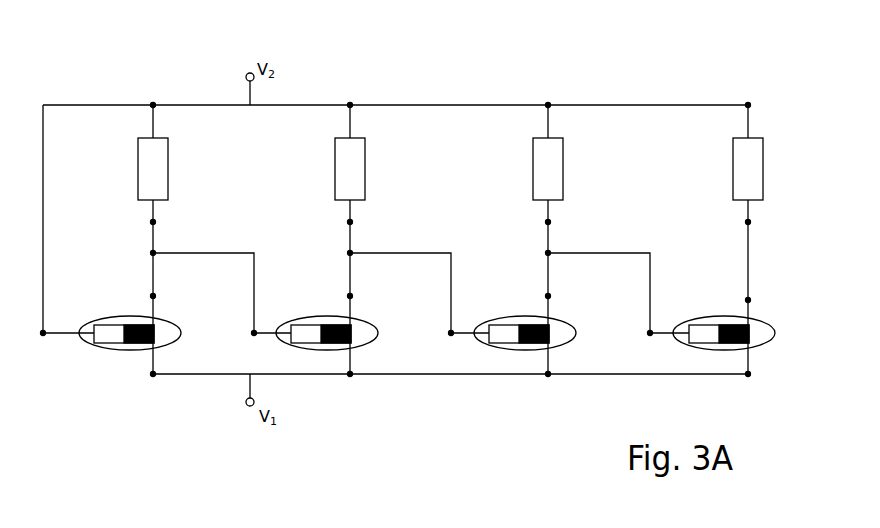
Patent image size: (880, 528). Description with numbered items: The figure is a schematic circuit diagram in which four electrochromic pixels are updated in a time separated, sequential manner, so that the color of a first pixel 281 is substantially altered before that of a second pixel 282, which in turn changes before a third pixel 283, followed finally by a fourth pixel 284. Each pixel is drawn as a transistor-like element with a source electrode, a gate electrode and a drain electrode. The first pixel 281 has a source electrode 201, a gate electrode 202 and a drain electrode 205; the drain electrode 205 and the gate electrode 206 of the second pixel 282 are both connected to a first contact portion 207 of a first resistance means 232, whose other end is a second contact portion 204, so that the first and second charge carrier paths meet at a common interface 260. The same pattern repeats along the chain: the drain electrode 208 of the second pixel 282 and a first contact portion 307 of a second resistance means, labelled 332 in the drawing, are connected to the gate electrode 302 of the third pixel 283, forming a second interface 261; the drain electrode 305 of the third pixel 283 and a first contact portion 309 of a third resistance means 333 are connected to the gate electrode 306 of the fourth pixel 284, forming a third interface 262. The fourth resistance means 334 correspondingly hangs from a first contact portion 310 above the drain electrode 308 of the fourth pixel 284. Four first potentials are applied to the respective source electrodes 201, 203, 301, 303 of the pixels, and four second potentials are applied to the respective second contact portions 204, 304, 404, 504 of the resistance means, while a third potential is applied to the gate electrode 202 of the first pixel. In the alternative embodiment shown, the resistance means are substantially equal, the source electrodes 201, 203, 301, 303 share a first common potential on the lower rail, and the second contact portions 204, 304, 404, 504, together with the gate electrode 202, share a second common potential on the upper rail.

The source electrode 201 is at (155, 375).
The gate electrode 202 is at (44, 332).
The source electrode 203 is at (352, 375).
The second contact portion 204 is at (155, 107).
The drain electrode 205 is at (155, 297).
The gate electrode 206 is at (255, 332).
The first contact portion 207 is at (154, 221).
The drain electrode 208 is at (352, 297).
The first resistance means 232 is at (151, 152).
The common interface 260 is at (155, 254).
The second interface 261 is at (352, 254).
The third interface 262 is at (550, 254).
The first pixel 281 is at (129, 292).
The second pixel 282 is at (326, 292).
The third pixel 283 is at (524, 292).
The fourth pixel 284 is at (731, 292).
The source electrode 301 is at (550, 375).
The gate electrode 302 is at (452, 332).
The source electrode 303 is at (750, 375).
The second contact portion 304 is at (352, 107).
The drain electrode 305 is at (550, 297).
The gate electrode 306 is at (651, 332).
The first contact portion 307 is at (351, 221).
The cell node of fourth stage 308 is at (750, 301).
The first contact portion 309 is at (549, 221).
The node below resistor R4 310 is at (749, 221).
The resistor R2 332 is at (348, 152).
The resistor R3 333 is at (546, 152).
The resistor R4 334 is at (746, 152).
The second contact portion 404 is at (550, 107).
The second contact portion 504 is at (750, 107).